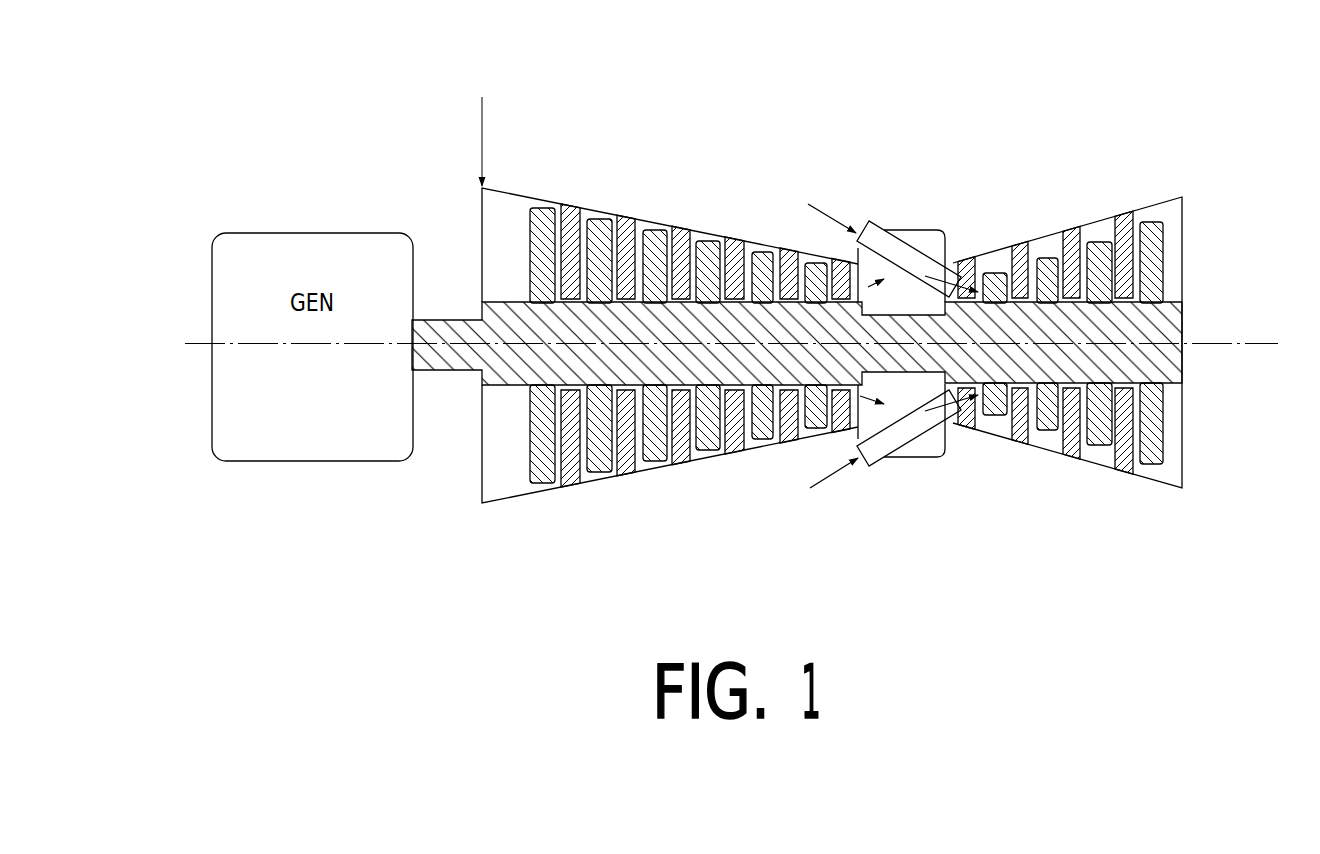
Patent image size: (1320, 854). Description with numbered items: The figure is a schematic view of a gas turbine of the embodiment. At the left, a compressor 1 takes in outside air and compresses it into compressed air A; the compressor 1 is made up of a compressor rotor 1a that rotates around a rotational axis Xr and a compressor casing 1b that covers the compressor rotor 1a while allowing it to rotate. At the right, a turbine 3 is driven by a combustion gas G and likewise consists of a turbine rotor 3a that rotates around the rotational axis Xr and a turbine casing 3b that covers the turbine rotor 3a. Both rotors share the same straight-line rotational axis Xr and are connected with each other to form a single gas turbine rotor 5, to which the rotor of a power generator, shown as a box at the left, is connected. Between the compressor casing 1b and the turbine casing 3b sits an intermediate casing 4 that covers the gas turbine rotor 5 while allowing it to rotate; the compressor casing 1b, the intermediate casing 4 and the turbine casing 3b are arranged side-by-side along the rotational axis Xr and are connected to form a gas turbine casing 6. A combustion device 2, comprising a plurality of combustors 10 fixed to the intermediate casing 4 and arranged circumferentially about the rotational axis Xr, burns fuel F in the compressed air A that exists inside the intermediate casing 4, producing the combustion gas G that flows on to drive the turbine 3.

The compressor 1 is at (662, 286).
The compressor rotor 1a is at (634, 312).
The compressor casing 1b is at (647, 124).
The combustion device 2 is at (909, 352).
The combustor 10 is at (887, 231).
The turbine 3 is at (1060, 279).
The turbine rotor 3a is at (1048, 256).
The turbine casing 3b is at (1075, 124).
The intermediate casing 4 is at (909, 340).
The gas turbine rotor 5 is at (908, 377).
The gas turbine casing 6 is at (1152, 482).
The fuel F is at (824, 335).
The compressed air A is at (856, 249).
The combustion gas G is at (950, 262).
The rotational axis Xr is at (1257, 341).